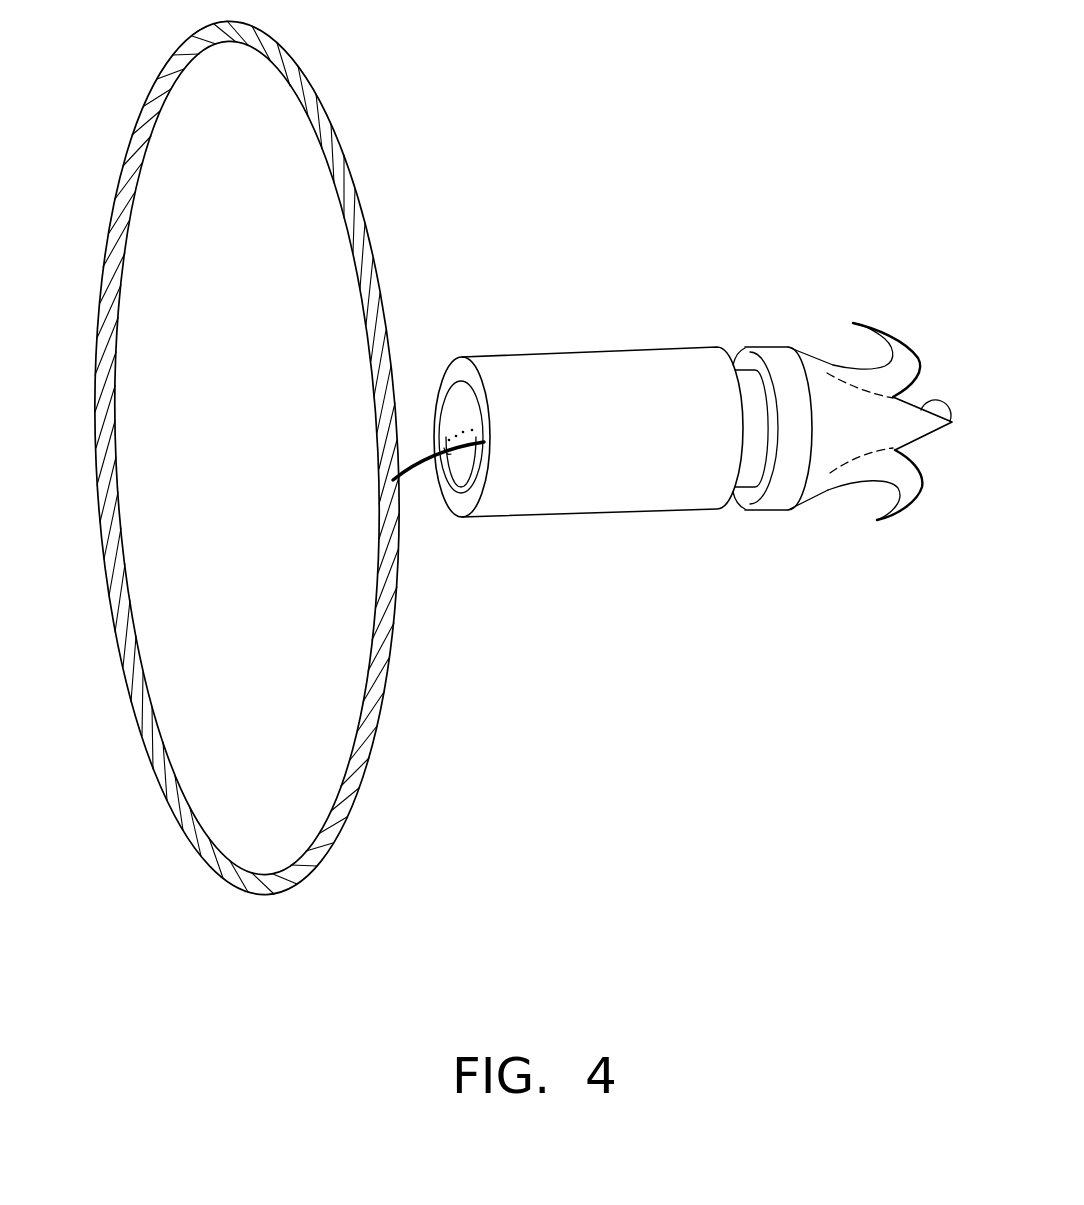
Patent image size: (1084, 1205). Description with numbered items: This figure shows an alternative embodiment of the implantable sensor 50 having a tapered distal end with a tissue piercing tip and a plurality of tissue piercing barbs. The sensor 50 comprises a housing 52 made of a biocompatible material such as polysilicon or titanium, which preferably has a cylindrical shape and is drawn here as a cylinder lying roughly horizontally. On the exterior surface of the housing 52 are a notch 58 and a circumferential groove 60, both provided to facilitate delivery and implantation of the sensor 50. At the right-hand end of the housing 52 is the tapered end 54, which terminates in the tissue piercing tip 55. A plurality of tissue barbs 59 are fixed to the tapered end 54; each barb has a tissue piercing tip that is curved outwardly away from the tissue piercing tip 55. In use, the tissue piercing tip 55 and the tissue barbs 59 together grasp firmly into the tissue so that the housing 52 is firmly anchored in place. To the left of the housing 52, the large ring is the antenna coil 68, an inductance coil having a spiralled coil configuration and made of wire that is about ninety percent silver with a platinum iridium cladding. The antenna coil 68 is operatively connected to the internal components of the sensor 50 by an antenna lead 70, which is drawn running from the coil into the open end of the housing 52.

The sensor 50 is at (478, 62).
The housing 52 is at (569, 351).
The tapered end 54 is at (842, 360).
The tissue piercing tip 55 is at (921, 410).
The notch 58 is at (750, 362).
The tissue barbs 59 is at (892, 335).
The circumferential groove 60 is at (735, 515).
The antenna coil 68 is at (367, 279).
The antenna lead 70 is at (419, 466).